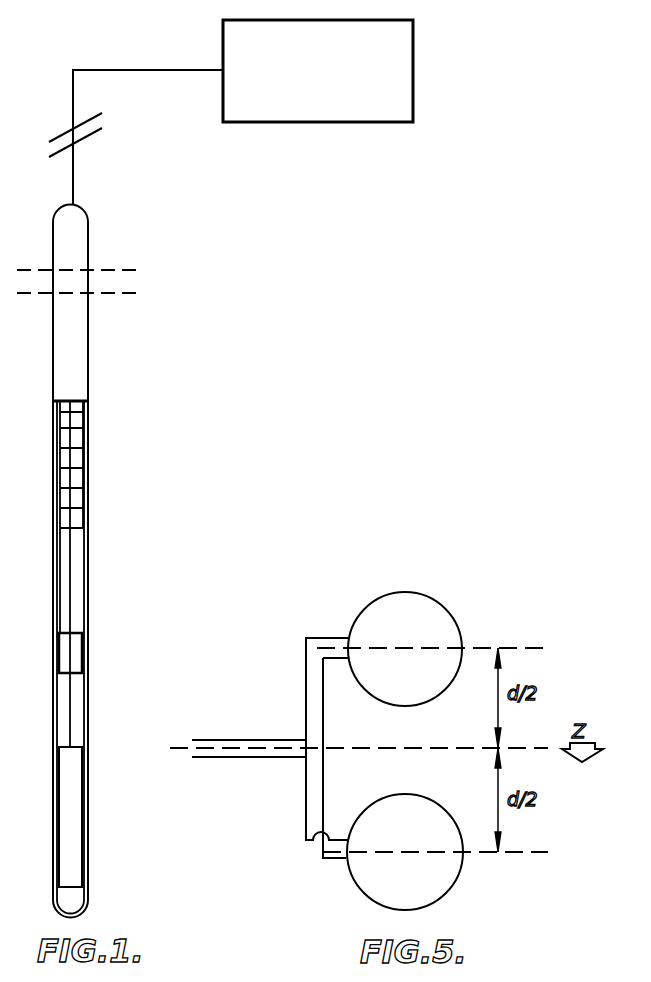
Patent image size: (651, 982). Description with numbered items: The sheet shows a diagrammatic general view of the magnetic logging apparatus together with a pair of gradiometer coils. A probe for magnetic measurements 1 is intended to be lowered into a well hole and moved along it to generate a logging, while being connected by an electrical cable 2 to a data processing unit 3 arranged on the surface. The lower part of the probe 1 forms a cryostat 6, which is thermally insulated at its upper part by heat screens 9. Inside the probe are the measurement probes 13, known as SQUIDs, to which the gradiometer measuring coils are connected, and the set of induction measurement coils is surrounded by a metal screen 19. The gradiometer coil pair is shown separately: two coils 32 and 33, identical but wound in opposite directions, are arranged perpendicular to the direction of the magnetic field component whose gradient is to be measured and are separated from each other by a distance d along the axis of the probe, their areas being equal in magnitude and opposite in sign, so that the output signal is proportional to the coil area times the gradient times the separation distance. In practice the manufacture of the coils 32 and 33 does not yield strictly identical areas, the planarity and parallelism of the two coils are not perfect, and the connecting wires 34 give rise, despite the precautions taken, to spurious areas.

In FIG. 1, the probe for magnetic measurements 1 is at (53, 338).
In FIG. 1, the electrical cable 2 is at (75, 168).
In FIG. 1, the data processing unit 3 is at (310, 110).
In FIG. 1, the cryostat 6 is at (75, 703).
In FIG. 1, the heat screens 9 is at (75, 408).
In FIG. 1, the measurement probes (SQUIDs) 13 is at (72, 650).
In FIG. 1, the metal screen 19 is at (70, 823).
In FIG. 5, the coil 32 is at (430, 594).
In FIG. 5, the coil 33 is at (430, 905).
In FIG. 5, the connecting wires 34 is at (313, 795).